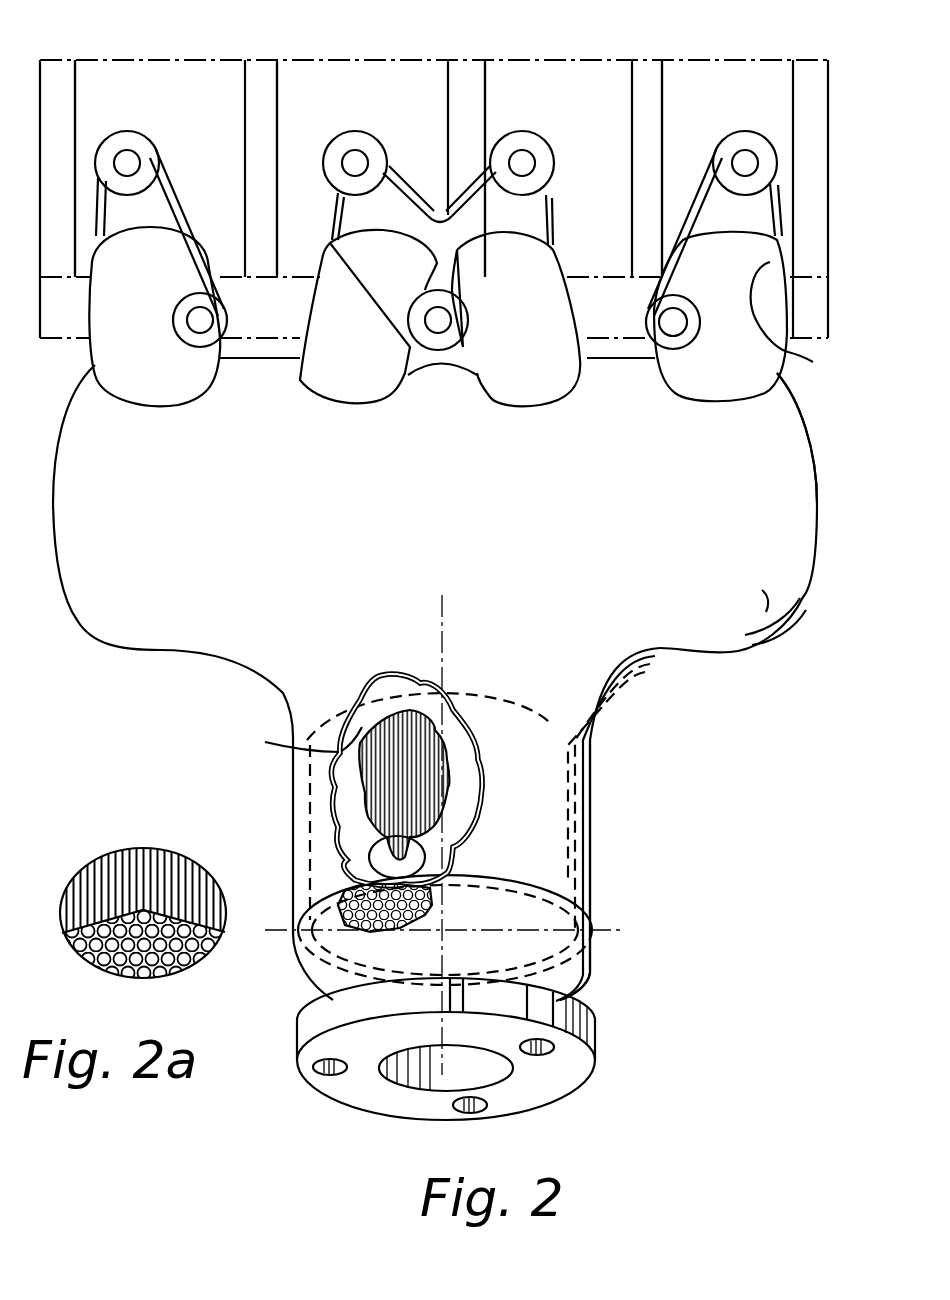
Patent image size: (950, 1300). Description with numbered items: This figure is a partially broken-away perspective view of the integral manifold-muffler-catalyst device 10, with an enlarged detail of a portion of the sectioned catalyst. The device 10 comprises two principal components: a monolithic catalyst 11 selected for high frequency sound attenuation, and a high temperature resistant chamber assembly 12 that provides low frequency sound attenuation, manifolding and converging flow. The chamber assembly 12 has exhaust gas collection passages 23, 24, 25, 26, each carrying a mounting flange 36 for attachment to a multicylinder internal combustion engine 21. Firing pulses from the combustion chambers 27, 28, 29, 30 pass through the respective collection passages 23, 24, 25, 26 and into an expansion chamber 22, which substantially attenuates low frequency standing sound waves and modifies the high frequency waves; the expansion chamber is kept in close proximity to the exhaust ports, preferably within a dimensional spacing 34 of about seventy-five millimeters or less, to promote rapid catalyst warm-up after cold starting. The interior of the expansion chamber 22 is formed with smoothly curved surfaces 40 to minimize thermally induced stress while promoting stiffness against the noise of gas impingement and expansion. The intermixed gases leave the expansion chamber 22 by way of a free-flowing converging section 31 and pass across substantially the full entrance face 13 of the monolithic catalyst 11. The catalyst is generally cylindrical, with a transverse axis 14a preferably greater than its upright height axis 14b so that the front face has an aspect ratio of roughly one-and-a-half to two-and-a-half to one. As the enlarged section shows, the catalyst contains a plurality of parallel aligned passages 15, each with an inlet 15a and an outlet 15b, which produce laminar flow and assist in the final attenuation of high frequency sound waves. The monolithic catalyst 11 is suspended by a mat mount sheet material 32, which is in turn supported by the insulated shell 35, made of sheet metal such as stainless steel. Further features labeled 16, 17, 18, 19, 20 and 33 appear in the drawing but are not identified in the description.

In FIG. 2, the manifold-muffler-catalyst device 10 is at (574, 812).
In FIG. 2, the monolithic catalyst 11 is at (648, 672).
In FIG. 2, the chamber assembly 12 is at (813, 447).
In FIG. 2, the entrance face 13 is at (550, 722).
In FIG. 2, the transverse axis 14a is at (600, 930).
In FIG. 2, the transverse height axis 14b is at (463, 880).
In FIG. 2A, the aligned passages 15 is at (159, 900).
In FIG. 2A, the inlet 15a is at (185, 800).
In FIG. 2A, the outlet 15b is at (167, 960).
In FIG. 2, the broken-out section of insulation 16 is at (364, 851).
In FIG. 2, the outlet flange 17 is at (310, 1025).
In FIG. 2, the outlet tube 18 is at (560, 980).
In FIG. 2, the inner liner 19 is at (560, 874).
In FIG. 2, the exhaust manifold 20 is at (435, 547).
In FIG. 2, the multicylinder internal combustion engine 21 is at (42, 88).
In FIG. 2, the expansion chamber 22 is at (188, 604).
In FIG. 2, the exhaust gas collection passage 23 is at (175, 268).
In FIG. 2, the exhaust gas collection passage 24 is at (375, 258).
In FIG. 2, the exhaust gas collection passage 25 is at (560, 268).
In FIG. 2, the exhaust gas collection passage 26 is at (813, 362).
In FIG. 2, the combustion chamber 27 is at (76, 86).
In FIG. 2, the combustion chamber 28 is at (300, 78).
In FIG. 2, the combustion chamber 29 is at (488, 87).
In FIG. 2, the combustion chamber 30 is at (664, 106).
In FIG. 2, the converging section 31 is at (288, 689).
In FIG. 2, the mat mount sheet material 32 is at (593, 718).
In FIG. 2, the manifold height 33 is at (635, 652).
In FIG. 2, the dimensional spacing 34 is at (200, 372).
In FIG. 2, the shell 35 is at (533, 837).
In FIG. 2, the mounting flange 36 is at (148, 150).
In FIG. 2, the smoothly curved surfaces 40 is at (680, 643).